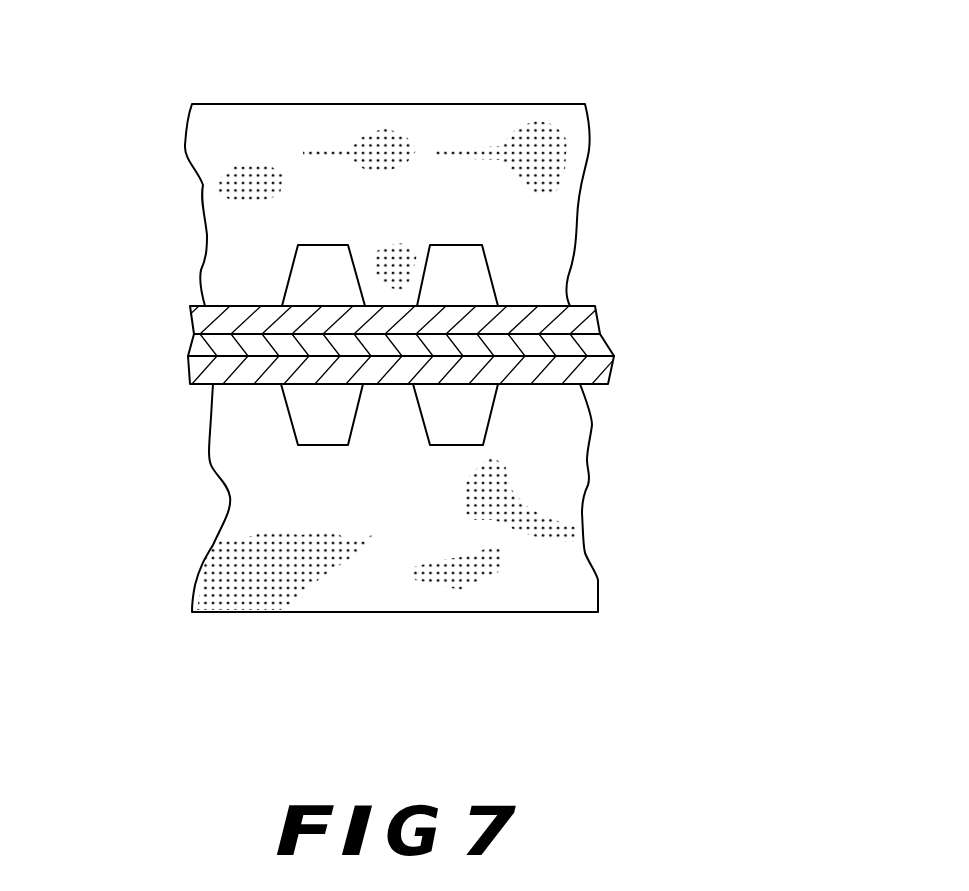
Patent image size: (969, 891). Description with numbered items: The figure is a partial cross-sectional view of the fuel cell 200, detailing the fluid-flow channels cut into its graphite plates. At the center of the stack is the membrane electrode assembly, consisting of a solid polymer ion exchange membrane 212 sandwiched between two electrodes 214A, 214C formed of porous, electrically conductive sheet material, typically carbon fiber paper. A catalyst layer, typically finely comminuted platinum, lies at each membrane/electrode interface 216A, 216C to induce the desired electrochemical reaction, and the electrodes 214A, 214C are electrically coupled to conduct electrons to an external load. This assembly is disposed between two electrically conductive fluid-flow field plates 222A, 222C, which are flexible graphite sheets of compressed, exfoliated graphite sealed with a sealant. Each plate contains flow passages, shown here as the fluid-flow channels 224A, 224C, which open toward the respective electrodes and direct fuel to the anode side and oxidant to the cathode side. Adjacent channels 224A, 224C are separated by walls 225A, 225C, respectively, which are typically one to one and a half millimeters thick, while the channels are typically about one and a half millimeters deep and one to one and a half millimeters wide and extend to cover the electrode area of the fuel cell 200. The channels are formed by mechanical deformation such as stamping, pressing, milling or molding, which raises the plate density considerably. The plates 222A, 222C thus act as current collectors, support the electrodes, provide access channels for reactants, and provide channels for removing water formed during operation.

The fuel cell 200 is at (895, 318).
The ion exchange membrane 212 is at (612, 348).
The electrode 214A is at (587, 305).
The electrode 214C is at (608, 385).
The membrane/electrode interface 216A is at (193, 333).
The membrane/electrode interface 216C is at (195, 355).
The fluid-flow field plate 222A is at (405, 104).
The fluid-flow field plate 222C is at (355, 614).
The fluid-flow channel 224A is at (308, 287).
The fluid-flow channel 224C is at (313, 422).
The wall 225A is at (407, 263).
The wall 225C is at (378, 412).